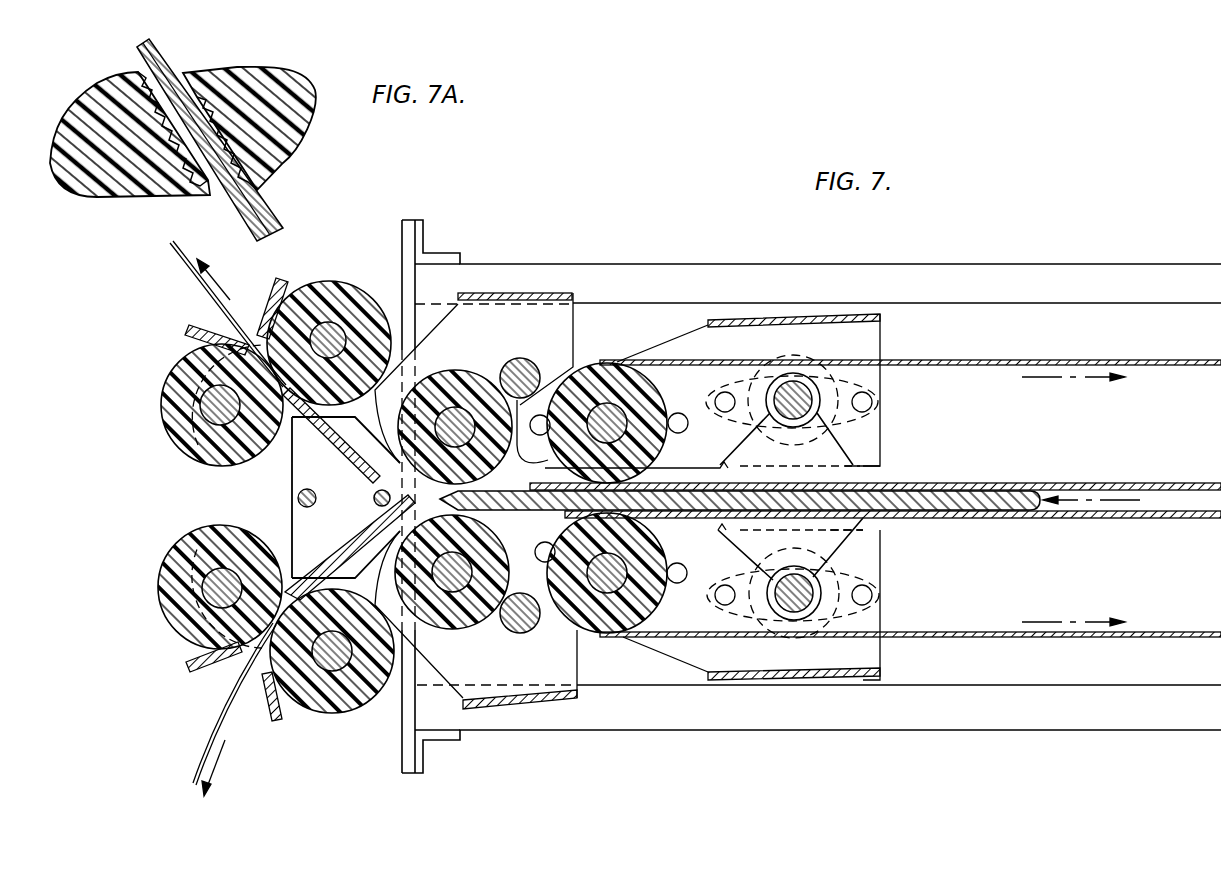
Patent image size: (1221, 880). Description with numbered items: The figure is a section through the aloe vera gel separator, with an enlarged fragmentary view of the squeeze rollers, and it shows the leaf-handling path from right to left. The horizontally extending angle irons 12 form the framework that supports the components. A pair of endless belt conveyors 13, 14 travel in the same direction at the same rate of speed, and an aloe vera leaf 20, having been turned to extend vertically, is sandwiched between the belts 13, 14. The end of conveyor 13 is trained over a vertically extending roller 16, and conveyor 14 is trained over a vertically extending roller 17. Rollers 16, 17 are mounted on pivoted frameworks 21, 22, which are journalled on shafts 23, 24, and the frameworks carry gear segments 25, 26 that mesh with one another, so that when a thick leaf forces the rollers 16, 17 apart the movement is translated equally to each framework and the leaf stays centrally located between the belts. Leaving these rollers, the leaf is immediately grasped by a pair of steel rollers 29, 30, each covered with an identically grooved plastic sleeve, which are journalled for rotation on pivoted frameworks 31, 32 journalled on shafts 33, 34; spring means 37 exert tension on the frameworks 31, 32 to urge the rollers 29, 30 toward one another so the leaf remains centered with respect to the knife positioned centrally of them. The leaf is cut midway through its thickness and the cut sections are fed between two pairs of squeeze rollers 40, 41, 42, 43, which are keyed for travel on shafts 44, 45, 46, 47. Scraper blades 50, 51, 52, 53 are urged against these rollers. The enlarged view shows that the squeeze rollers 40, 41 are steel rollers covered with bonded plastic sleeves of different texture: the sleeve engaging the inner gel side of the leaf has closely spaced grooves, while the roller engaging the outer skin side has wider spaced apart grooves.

In FIG. 7, the angle irons 12 is at (1073, 272).
In FIG. 7, the endless belt conveyor 13 is at (1072, 522).
In FIG. 7, the endless belt conveyor 14 is at (1107, 484).
In FIG. 7, the vertically extending roller 16 is at (645, 606).
In FIG. 7, the vertically extending roller 17 is at (597, 383).
In FIG. 7, the aloe vera leaf 20 is at (952, 491).
In FIG. 7, the pivoted framework 21 is at (882, 620).
In FIG. 7, the pivoted framework 22 is at (880, 440).
In FIG. 7, the shaft 23 is at (797, 397).
In FIG. 7, the shaft 24 is at (805, 590).
In FIG. 7, the gear segment 25 is at (860, 473).
In FIG. 7, the gear segment 26 is at (850, 552).
In FIG. 7, the steel roller 29 is at (490, 623).
In FIG. 7, the steel roller 30 is at (470, 385).
In FIG. 7, the pivoted framework 31 is at (575, 322).
In FIG. 7, the pivoted framework 32 is at (585, 678).
In FIG. 7, the shaft 33 is at (517, 630).
In FIG. 7, the shaft 34 is at (520, 372).
In FIG. 7, the spring means 37 is at (318, 524).
In FIG. 7A, the squeeze roller 40 is at (133, 195).
In FIG. 7, the squeeze roller 40 is at (230, 460).
In FIG. 7A, the squeeze roller 41 is at (290, 127).
In FIG. 7, the squeeze roller 41 is at (363, 300).
In FIG. 7, the squeeze roller 42 is at (170, 574).
In FIG. 7, the squeeze roller 43 is at (348, 713).
In FIG. 7, the shaft 44 is at (231, 572).
In FIG. 7, the shaft 45 is at (330, 660).
In FIG. 7, the shaft 46 is at (183, 452).
In FIG. 7, the shaft 47 is at (327, 335).
In FIG. 7, the scraper blade 50 is at (195, 330).
In FIG. 7, the scraper blade 51 is at (265, 292).
In FIG. 7, the scraper blade 52 is at (202, 668).
In FIG. 7, the scraper blade 53 is at (268, 707).